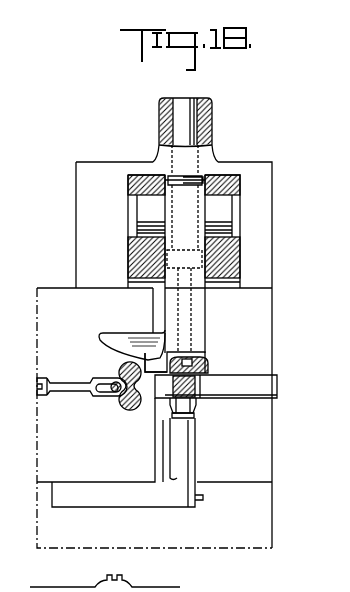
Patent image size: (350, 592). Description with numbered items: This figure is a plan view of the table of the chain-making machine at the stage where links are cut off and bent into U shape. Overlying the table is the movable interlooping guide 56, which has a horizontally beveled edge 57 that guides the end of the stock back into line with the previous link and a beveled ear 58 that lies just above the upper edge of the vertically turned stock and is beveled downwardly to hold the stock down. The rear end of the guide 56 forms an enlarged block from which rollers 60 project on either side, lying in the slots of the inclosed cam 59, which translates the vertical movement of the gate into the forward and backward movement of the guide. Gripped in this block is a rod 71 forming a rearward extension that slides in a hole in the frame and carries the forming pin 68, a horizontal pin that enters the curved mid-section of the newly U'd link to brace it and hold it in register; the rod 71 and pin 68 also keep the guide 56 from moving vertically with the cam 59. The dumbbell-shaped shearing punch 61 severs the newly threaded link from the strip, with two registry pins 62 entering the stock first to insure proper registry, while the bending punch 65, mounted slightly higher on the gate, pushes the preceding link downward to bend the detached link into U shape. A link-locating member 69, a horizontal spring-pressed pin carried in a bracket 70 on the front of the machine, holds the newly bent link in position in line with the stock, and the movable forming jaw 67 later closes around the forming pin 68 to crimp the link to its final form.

The rod 71 is at (184, 121).
The rollers 60 is at (212, 218).
The inclosed cam 59 is at (240, 243).
The interlooping guide 56 is at (194, 303).
The beveled edge 57 is at (117, 340).
The beveled ear 58 is at (167, 355).
The forming pin 68 is at (180, 333).
The bending punch 65 is at (202, 387).
The link-locating member 69 is at (195, 408).
The bracket 70 is at (133, 495).
The registry pins 62 is at (97, 395).
The shearing punch 61 is at (120, 408).
The forming jaw 67 is at (129, 583).